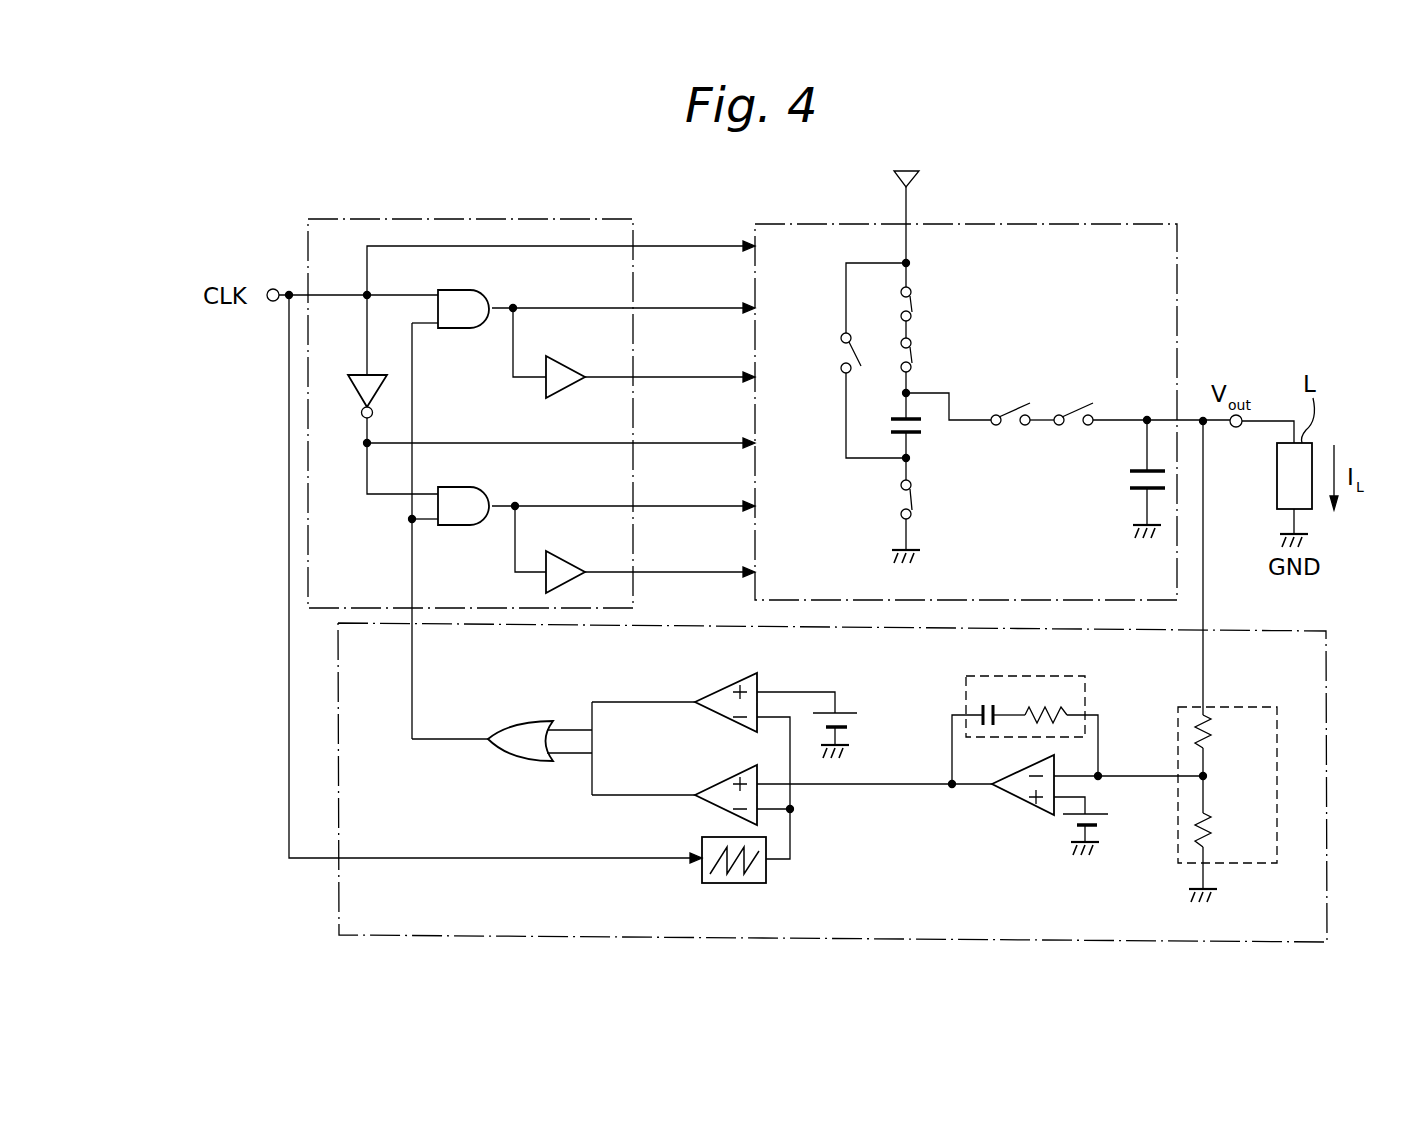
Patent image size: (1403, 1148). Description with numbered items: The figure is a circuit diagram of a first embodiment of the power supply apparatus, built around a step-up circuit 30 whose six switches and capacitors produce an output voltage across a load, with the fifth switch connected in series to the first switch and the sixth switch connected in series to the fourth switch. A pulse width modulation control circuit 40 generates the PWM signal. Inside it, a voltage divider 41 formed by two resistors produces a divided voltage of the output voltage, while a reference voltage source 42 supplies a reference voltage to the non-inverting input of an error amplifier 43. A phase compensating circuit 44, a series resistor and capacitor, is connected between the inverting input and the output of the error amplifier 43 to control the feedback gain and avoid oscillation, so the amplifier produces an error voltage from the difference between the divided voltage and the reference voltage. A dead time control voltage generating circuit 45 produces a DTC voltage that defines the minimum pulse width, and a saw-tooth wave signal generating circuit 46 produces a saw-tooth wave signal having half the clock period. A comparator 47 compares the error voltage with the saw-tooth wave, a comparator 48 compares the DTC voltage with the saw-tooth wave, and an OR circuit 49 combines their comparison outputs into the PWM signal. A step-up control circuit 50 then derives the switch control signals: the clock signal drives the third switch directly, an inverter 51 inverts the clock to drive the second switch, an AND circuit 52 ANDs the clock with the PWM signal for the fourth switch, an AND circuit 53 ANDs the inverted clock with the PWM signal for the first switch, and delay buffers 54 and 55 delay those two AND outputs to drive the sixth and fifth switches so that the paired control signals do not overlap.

The step-up circuit 30 is at (1040, 224).
The pulse width modulation control circuit 40 is at (1267, 631).
The voltage divider 41 is at (1237, 864).
The reference voltage source 42 is at (1107, 828).
The error amplifier 43 is at (1008, 798).
The phase compensating circuit 44 is at (1088, 693).
The dead time control voltage generating circuit 45 is at (847, 703).
The saw-tooth wave signal generating circuit 46 is at (768, 874).
The comparator 47 is at (724, 778).
The comparator 48 is at (724, 683).
The OR circuit 49 is at (523, 762).
The step-up control circuit 50 is at (519, 219).
The inverter 51 is at (364, 373).
The AND circuit 52 is at (455, 290).
The AND circuit 53 is at (455, 487).
The delay buffer 54 is at (546, 382).
The delay buffer 55 is at (546, 578).